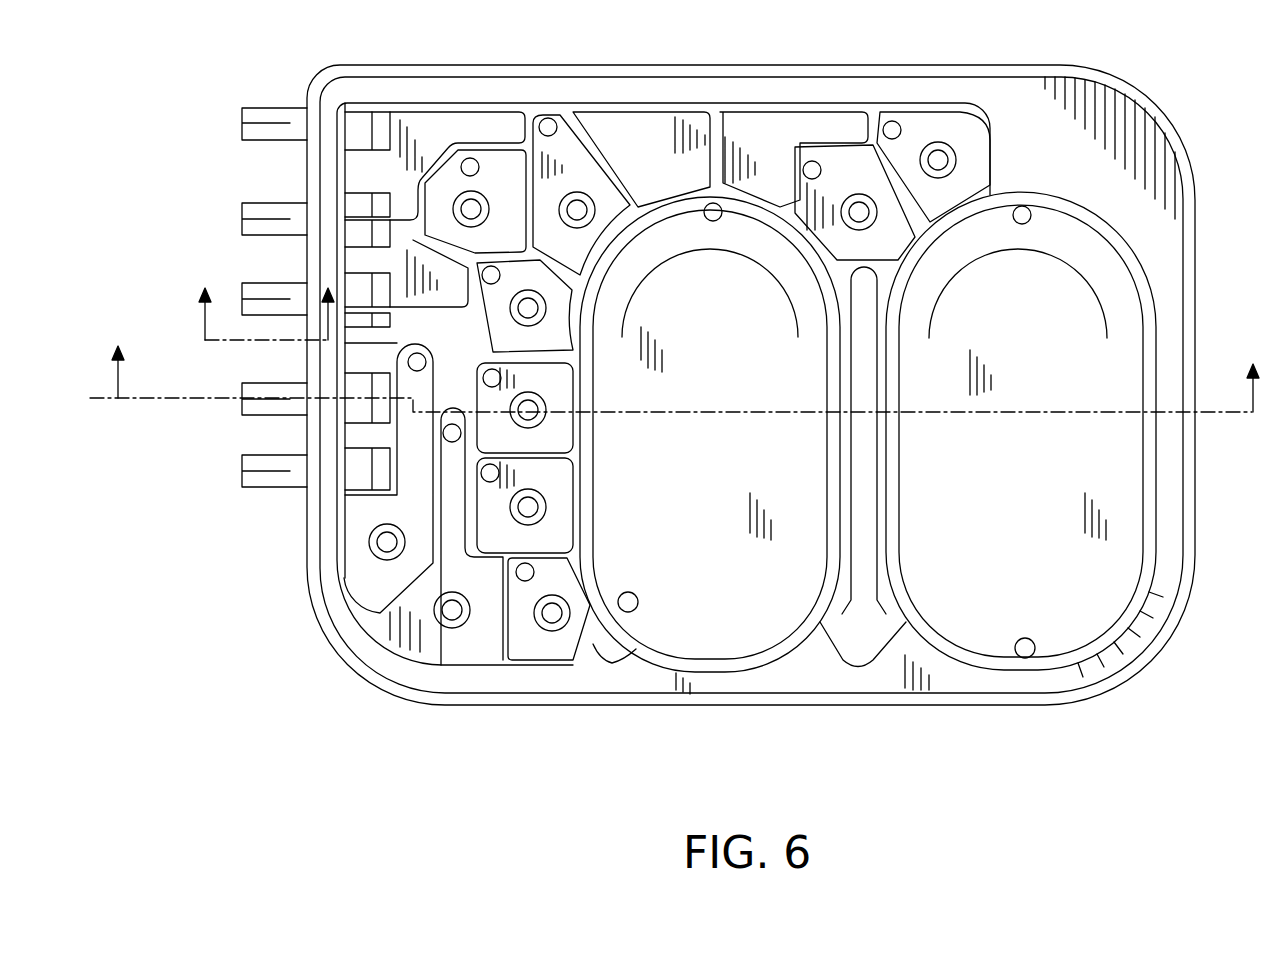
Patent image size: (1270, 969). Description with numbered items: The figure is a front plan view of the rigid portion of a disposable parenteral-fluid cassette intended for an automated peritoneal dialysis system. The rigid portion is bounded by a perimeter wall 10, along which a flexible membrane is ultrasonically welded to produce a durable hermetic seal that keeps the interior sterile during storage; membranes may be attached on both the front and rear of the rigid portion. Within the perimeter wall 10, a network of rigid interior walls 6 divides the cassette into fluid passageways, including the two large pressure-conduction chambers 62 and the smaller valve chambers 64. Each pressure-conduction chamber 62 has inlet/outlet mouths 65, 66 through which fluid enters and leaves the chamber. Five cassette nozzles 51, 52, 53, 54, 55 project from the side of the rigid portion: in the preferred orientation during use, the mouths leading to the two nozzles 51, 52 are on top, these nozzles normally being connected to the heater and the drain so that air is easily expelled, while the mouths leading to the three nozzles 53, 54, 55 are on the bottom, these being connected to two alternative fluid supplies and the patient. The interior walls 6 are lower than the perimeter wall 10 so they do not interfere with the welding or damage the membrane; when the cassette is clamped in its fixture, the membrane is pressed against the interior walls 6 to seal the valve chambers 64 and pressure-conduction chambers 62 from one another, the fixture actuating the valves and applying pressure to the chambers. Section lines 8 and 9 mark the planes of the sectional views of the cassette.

The perimeter wall 10 is at (1063, 65).
The cassette nozzle 51 is at (256, 108).
The cassette nozzle 52 is at (256, 203).
The cassette nozzle 53 is at (256, 283).
The cassette nozzle 54 is at (256, 383).
The cassette nozzle 55 is at (256, 455).
The pressure-conduction chamber 62 is at (728, 591).
The valve chamber 64 is at (393, 595).
The inlet/outlet mouth 65 is at (634, 593).
The inlet/outlet mouth 66 is at (713, 222).
The interior wall 6 is at (614, 670).
The section line 8- 8 is at (674, 376).
The section line 9- 9 is at (275, 328).